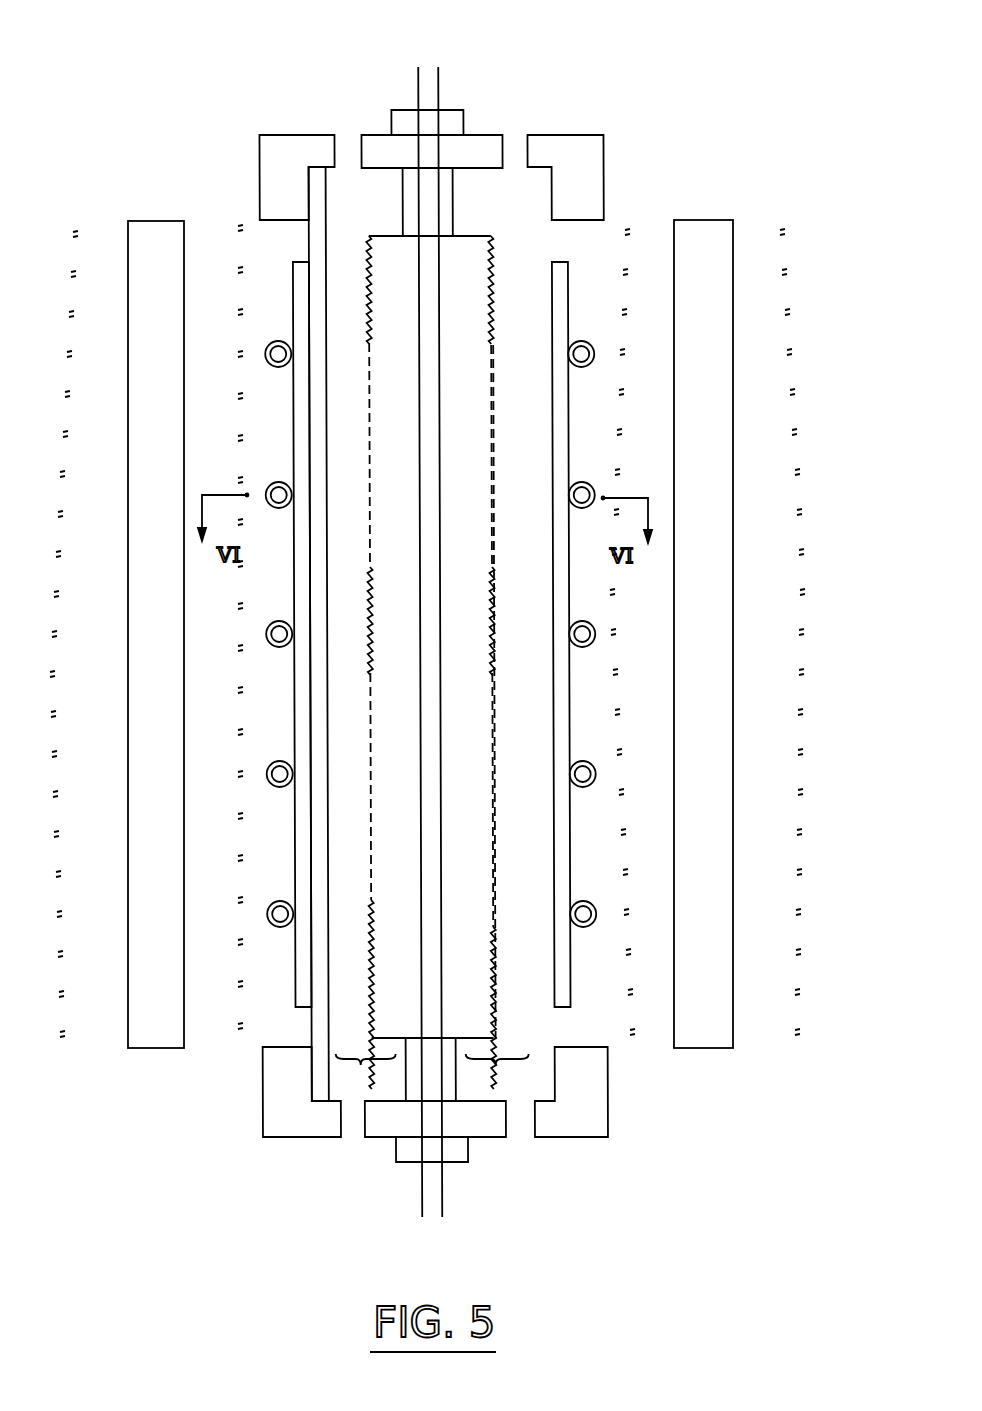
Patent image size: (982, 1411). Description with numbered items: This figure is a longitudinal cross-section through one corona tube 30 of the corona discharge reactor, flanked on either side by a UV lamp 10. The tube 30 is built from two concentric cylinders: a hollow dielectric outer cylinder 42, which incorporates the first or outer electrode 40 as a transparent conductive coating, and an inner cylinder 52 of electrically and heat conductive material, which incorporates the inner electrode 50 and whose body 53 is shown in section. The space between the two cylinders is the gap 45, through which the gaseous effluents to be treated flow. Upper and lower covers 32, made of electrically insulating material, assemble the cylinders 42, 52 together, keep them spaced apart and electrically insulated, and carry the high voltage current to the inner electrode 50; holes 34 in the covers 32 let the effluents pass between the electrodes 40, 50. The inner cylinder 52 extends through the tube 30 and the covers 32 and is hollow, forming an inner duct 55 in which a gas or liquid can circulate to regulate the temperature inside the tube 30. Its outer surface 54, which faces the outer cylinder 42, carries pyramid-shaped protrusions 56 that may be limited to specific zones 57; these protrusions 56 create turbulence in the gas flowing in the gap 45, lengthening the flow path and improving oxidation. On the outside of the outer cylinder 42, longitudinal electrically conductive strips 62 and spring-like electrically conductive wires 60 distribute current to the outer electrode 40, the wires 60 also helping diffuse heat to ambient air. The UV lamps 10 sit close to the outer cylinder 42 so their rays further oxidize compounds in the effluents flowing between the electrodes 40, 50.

The UV lamp 10 is at (137, 963).
The corona tube 30 is at (338, 1168).
The cover 32 is at (580, 148).
The hole 34 is at (512, 152).
The outer electrode 40 is at (601, 263).
The outer cylinder 42 is at (315, 233).
The gap 45 is at (432, 1073).
The inner electrode 50 is at (360, 195).
The inner cylinder 52 is at (378, 392).
The threaded body 53 is at (435, 260).
The outer surface 54 is at (490, 350).
The inner duct 55 is at (428, 75).
The protrusions 56 is at (490, 648).
The specific zones 57 is at (366, 567).
The spring-like electrically conductive wires 60 is at (590, 900).
The electrically conductive strips 62 is at (303, 990).